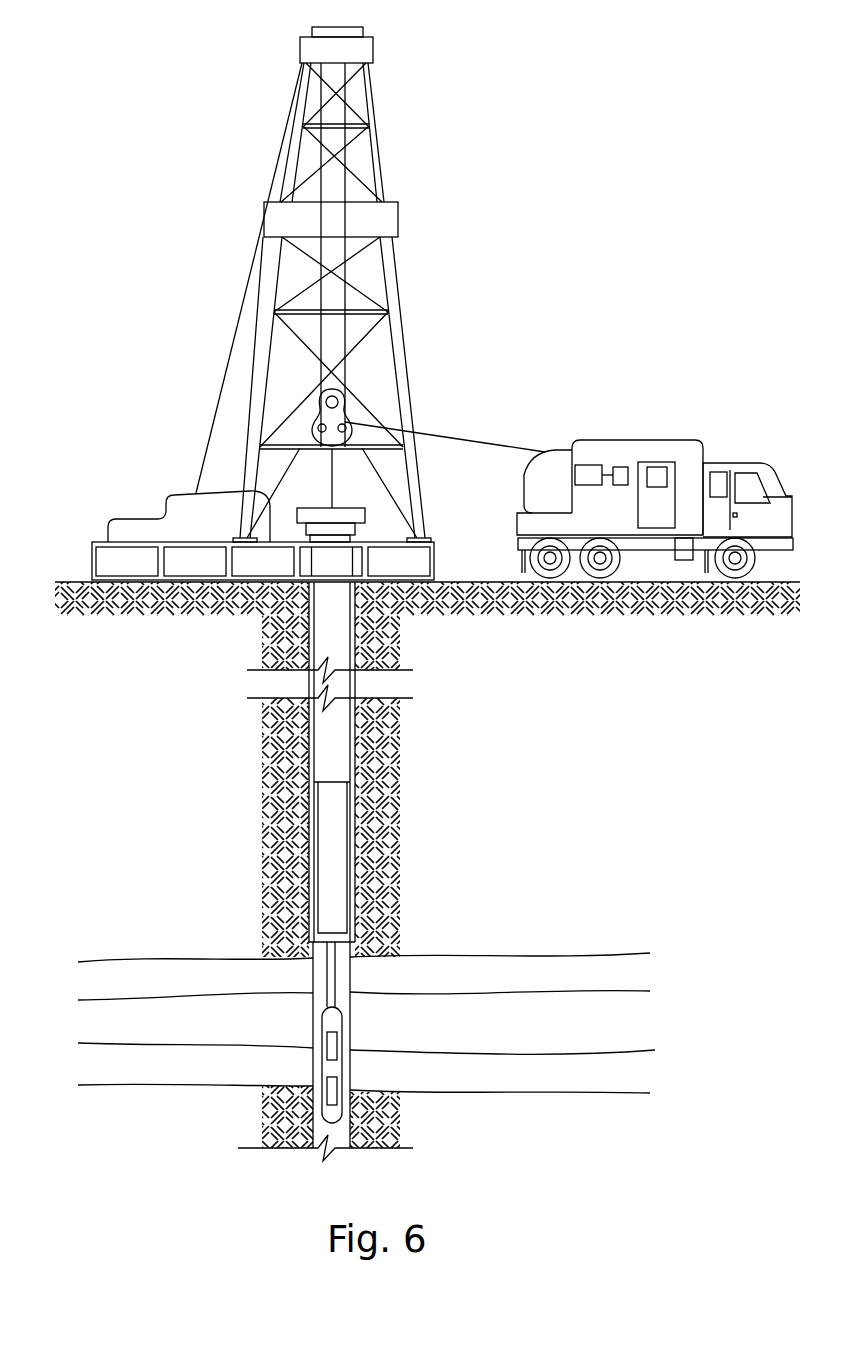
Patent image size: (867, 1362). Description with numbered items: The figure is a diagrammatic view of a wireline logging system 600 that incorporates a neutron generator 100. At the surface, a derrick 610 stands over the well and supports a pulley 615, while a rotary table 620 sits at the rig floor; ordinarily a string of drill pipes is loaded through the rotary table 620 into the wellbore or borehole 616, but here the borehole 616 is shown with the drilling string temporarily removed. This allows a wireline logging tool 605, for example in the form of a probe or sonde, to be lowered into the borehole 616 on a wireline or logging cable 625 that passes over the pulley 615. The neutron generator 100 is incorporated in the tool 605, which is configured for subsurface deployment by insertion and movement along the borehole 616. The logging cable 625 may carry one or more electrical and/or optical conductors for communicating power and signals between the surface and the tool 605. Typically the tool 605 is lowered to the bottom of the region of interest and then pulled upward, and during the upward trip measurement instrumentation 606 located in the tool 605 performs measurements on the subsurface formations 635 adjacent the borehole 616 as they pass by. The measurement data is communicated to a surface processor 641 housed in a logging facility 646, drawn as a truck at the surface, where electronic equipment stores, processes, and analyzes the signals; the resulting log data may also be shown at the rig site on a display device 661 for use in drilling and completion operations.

The wireline logging system 600 is at (174, 88).
The derrick 610 is at (378, 136).
The pulley 615 is at (338, 393).
The rotary table 620 is at (355, 512).
The wireline or logging cable 625 is at (432, 432).
The logging facility 646 is at (628, 440).
The surface processor 641 is at (594, 465).
The display device 661 is at (657, 467).
The borehole 616 is at (312, 972).
The tool 605 is at (333, 1018).
The measurement instrumentation 606 is at (330, 1047).
The neutron generator 100 is at (330, 1085).
The subsurface formations 635 is at (663, 952).